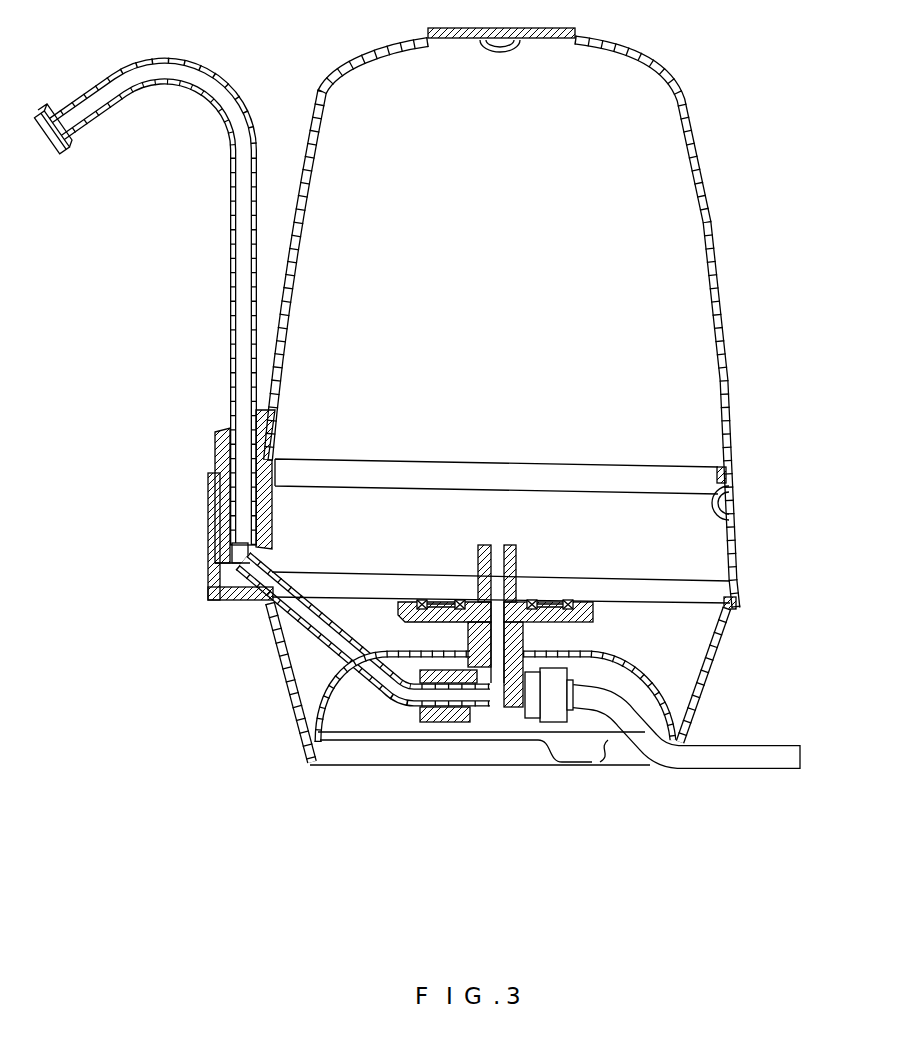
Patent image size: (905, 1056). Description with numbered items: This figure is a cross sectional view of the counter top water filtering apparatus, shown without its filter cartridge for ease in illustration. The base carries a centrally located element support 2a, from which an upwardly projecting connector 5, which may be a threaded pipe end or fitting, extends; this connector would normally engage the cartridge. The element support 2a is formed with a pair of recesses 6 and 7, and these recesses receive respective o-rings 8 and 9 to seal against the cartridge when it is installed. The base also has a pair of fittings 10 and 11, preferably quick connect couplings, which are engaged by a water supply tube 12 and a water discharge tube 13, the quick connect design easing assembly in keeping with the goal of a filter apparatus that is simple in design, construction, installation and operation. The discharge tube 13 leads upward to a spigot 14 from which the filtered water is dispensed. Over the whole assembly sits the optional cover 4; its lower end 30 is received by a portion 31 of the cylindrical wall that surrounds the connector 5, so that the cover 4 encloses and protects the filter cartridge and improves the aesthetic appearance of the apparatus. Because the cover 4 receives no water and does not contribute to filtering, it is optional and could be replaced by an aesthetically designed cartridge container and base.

The cover 4 is at (703, 190).
The connector 5 is at (505, 546).
The recess 6 is at (567, 604).
The recess 7 is at (520, 593).
The o-ring 8 is at (420, 602).
The o-ring 9 is at (456, 602).
The fitting 10 is at (543, 708).
The fitting 11 is at (432, 715).
The water supply tube 12 is at (735, 755).
The water discharge tube 13 is at (323, 642).
The spigot 14 is at (78, 145).
The element support 2a is at (593, 630).
The end 30 is at (732, 470).
The portion 31 is at (730, 522).